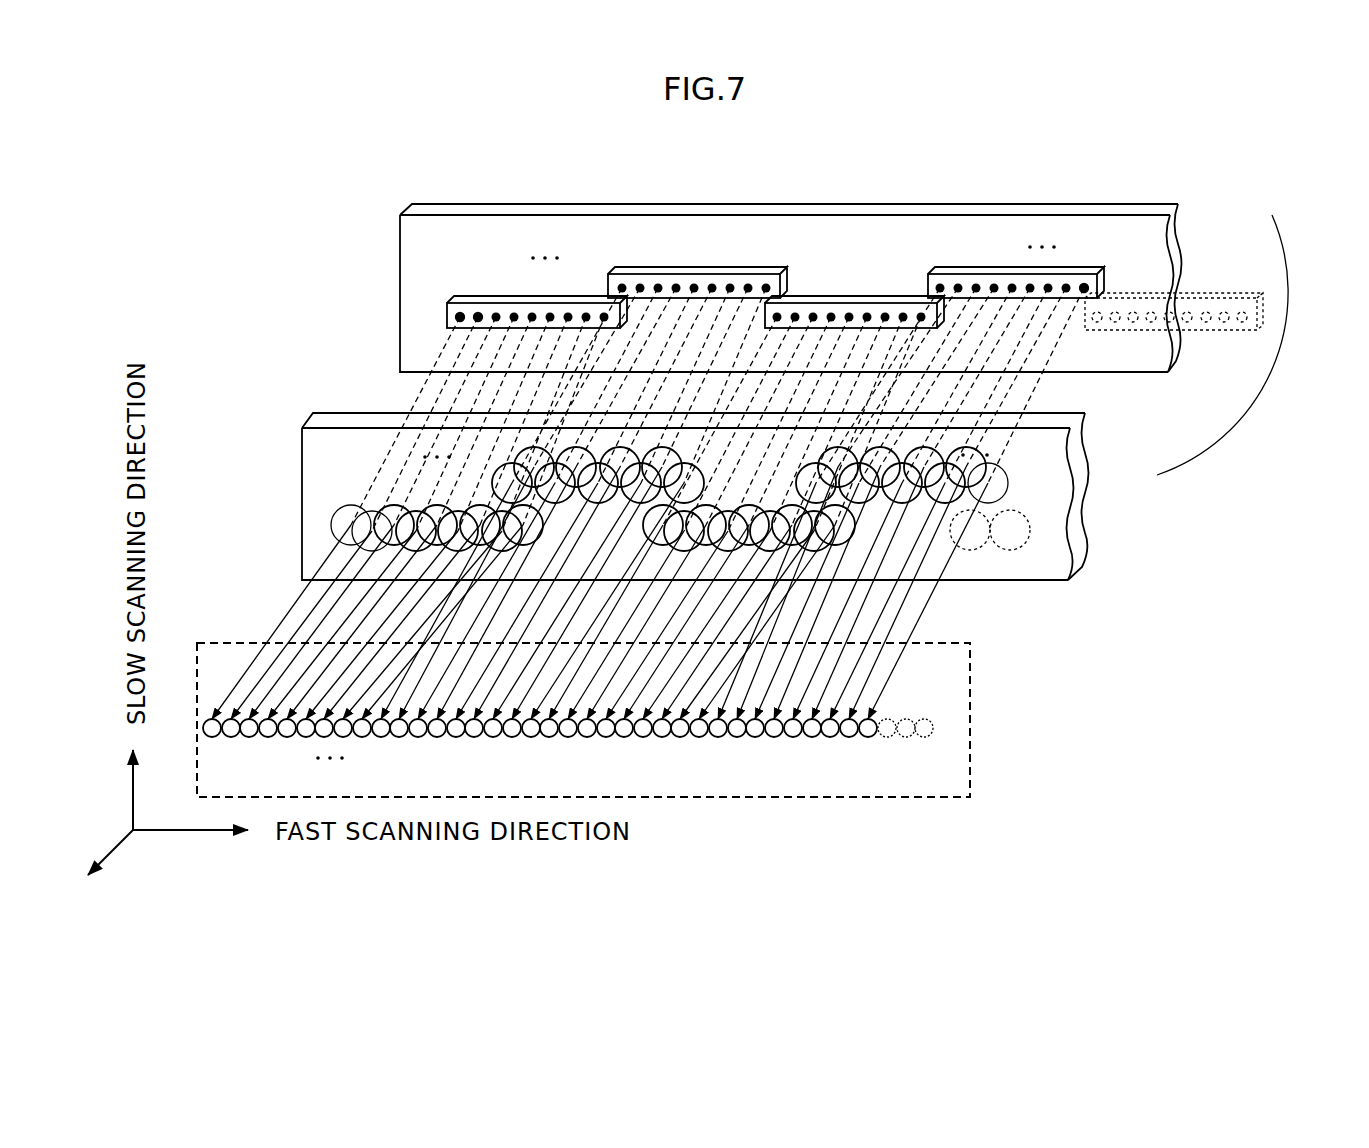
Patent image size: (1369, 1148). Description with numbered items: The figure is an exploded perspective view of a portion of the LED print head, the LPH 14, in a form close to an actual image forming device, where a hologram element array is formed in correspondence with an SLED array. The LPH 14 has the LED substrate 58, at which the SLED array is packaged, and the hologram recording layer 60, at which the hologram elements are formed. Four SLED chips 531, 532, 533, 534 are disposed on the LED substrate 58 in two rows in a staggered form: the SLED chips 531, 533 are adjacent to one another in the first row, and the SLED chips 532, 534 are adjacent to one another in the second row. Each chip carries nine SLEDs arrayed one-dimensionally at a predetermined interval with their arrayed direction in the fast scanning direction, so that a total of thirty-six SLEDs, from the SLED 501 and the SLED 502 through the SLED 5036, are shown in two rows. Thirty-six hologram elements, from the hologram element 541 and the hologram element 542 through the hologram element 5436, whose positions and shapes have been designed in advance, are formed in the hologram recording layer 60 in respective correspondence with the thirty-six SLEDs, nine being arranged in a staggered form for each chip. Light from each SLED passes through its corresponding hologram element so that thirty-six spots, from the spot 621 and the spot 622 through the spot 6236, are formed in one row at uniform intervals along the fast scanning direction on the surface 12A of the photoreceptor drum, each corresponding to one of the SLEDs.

The LPH 14 is at (1273, 370).
The LED substrate 58 is at (1180, 243).
The hologram recording layer 60 is at (1082, 490).
The surface of the photoreceptor drum 12A is at (583, 720).
The SLED chip 531 is at (447, 312).
The SLED chip 532 is at (675, 274).
The SLED chip 533 is at (840, 300).
The SLED chip 534 is at (993, 272).
The SLED 501 is at (460, 313).
The SLED 502 is at (478, 313).
The SLED 5036 is at (1084, 284).
The hologram element 541 is at (351, 505).
The hologram element 542 is at (372, 511).
The hologram element 5436 is at (1000, 484).
The spot 621 is at (212, 737).
The spot 622 is at (231, 737).
The spot 6236 is at (868, 737).